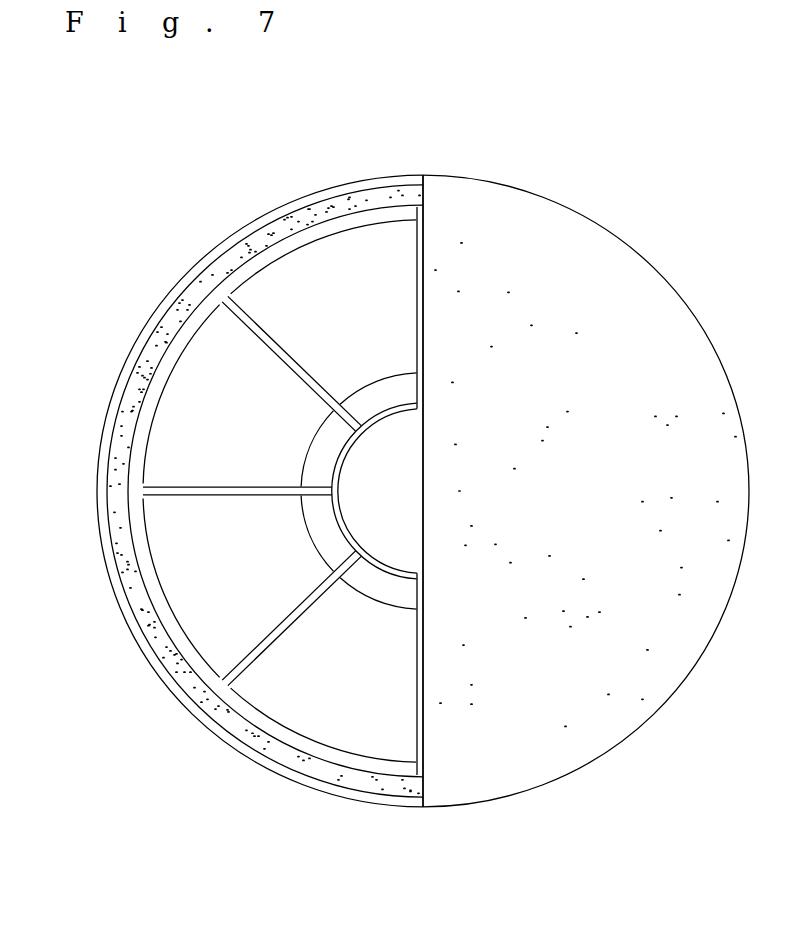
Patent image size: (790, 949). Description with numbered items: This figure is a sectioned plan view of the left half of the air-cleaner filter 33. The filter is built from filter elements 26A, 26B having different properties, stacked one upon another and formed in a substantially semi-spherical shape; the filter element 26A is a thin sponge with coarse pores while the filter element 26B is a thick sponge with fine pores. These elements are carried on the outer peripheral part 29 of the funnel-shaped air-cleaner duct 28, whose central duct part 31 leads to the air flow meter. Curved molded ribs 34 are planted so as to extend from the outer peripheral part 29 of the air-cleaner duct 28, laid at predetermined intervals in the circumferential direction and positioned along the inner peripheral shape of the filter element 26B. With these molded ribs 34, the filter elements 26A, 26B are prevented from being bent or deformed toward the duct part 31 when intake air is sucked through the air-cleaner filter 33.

The air-cleaner filter 33 is at (152, 280).
The filter element 26A is at (108, 405).
The filter element 26B is at (118, 578).
The outer peripheral part 29 is at (137, 633).
The air-cleaner duct 28 is at (200, 624).
The molded ribs 34 is at (413, 278).
The duct part 31 is at (308, 535).